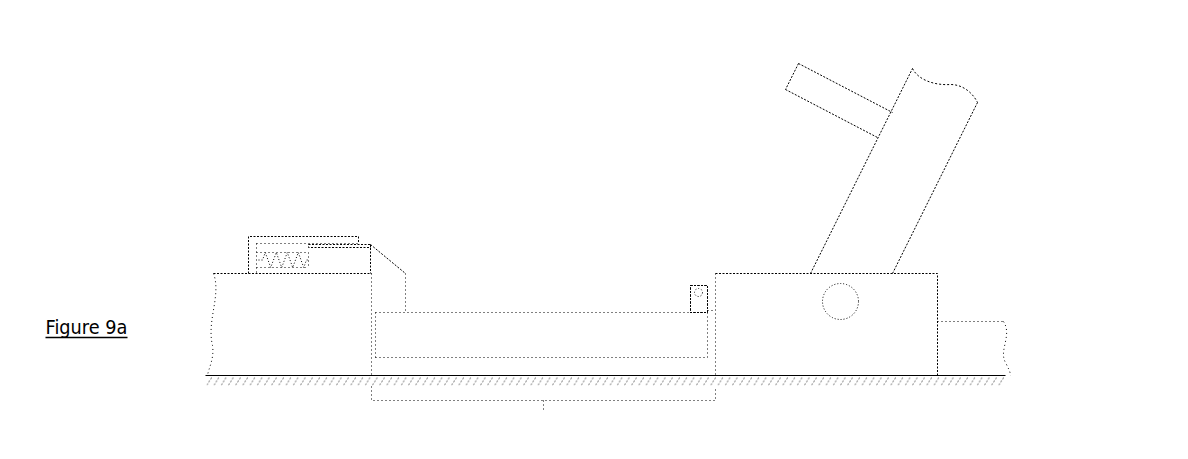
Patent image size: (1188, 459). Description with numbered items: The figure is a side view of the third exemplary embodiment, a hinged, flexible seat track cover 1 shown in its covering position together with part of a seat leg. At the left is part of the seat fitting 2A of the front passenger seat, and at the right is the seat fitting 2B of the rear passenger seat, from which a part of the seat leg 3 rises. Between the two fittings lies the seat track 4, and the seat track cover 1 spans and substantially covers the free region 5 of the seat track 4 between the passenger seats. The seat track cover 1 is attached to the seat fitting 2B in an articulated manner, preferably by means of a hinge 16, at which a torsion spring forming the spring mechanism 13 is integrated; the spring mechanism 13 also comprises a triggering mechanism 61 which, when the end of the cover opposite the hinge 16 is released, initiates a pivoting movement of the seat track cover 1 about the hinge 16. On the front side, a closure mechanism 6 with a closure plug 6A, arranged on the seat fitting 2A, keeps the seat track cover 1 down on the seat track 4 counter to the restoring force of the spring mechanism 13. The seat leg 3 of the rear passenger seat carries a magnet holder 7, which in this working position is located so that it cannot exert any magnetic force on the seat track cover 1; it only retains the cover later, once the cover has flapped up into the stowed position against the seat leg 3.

The seat track cover 1 is at (540, 296).
The seat fitting of the front passenger seat 2A is at (218, 272).
The seat fitting of the rear passenger seat 2B is at (934, 271).
The seat leg 3 is at (979, 100).
The seat track 4 is at (1052, 340).
The free region 5 is at (544, 413).
The closure mechanism 6 is at (385, 200).
The closure plug 6A is at (323, 246).
The magnet holder 7 is at (789, 79).
The spring mechanism 13 is at (688, 268).
The hinge 16 is at (699, 299).
The triggering mechanism 61 is at (699, 299).